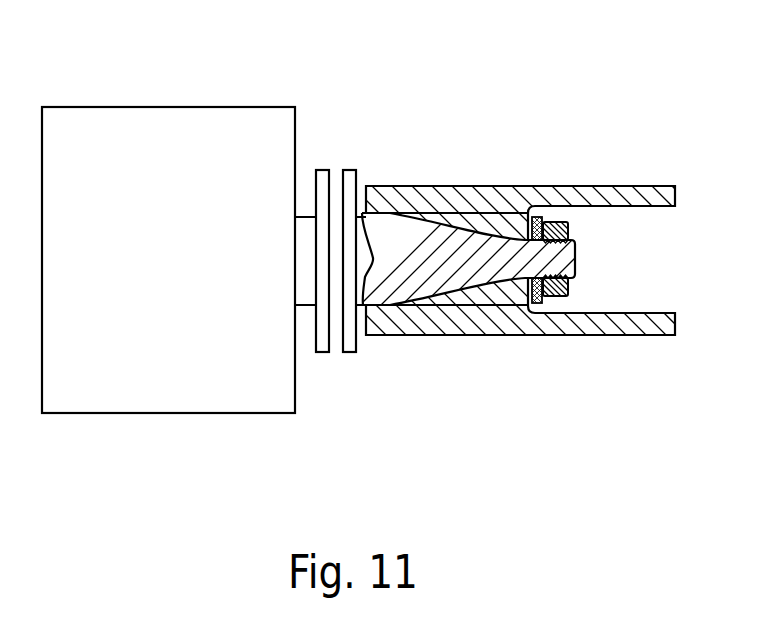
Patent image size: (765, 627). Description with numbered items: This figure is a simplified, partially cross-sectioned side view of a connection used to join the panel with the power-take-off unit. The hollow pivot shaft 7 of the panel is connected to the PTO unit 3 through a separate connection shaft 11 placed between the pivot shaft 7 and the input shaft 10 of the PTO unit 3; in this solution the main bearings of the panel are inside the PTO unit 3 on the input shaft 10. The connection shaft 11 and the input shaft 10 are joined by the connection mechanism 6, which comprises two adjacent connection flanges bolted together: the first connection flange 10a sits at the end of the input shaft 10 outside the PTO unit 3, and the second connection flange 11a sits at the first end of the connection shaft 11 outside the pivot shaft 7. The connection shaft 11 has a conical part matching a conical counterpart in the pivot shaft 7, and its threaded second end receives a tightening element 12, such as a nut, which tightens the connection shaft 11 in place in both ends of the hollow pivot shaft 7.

The PTO unit 3 is at (116, 117).
The connection mechanism 6 is at (339, 127).
The pivot shaft 7 is at (650, 197).
The input shaft 10 is at (305, 218).
The first connection flange 10a is at (323, 350).
The connection shaft 11 is at (397, 217).
The second connection flange 11a is at (357, 345).
The tightening element 12 is at (567, 228).